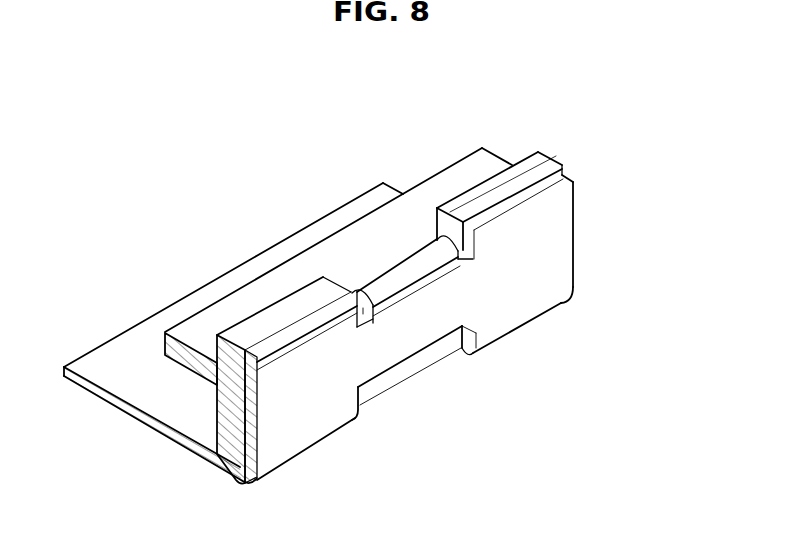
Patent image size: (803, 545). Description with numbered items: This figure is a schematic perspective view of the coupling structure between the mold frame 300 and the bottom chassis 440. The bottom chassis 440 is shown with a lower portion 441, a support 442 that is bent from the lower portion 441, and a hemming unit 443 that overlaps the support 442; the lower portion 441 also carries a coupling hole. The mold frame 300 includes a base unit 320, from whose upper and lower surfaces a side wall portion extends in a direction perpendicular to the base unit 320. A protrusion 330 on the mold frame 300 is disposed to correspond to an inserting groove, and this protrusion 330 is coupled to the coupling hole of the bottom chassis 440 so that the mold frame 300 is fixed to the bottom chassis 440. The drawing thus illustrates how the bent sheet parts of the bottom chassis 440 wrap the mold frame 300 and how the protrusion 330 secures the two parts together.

The mold frame 300 is at (503, 137).
The base unit 320 is at (457, 170).
The protrusion 330 is at (410, 368).
The bottom chassis 440 is at (596, 253).
The lower portion 441 is at (138, 360).
The support 442 is at (548, 222).
The hemming unit 443 is at (405, 273).